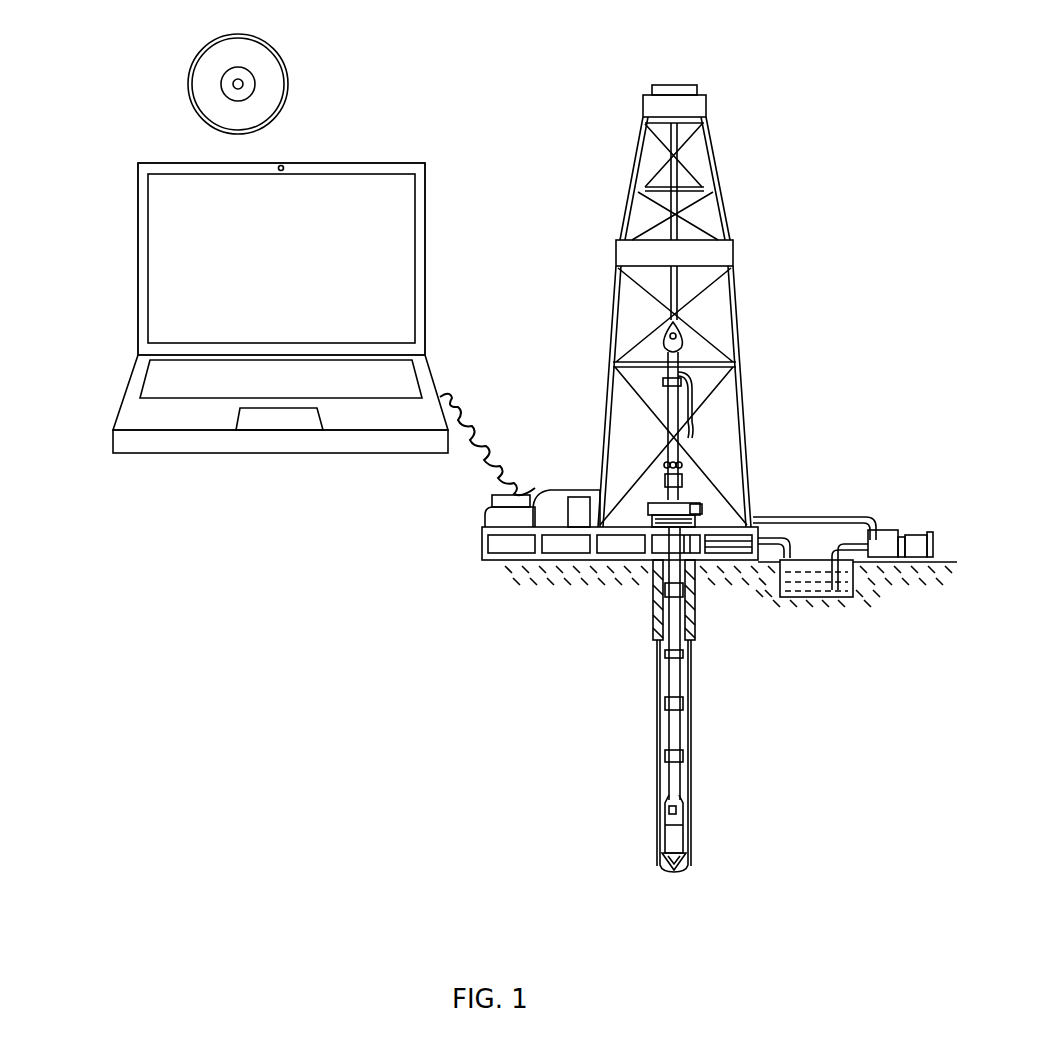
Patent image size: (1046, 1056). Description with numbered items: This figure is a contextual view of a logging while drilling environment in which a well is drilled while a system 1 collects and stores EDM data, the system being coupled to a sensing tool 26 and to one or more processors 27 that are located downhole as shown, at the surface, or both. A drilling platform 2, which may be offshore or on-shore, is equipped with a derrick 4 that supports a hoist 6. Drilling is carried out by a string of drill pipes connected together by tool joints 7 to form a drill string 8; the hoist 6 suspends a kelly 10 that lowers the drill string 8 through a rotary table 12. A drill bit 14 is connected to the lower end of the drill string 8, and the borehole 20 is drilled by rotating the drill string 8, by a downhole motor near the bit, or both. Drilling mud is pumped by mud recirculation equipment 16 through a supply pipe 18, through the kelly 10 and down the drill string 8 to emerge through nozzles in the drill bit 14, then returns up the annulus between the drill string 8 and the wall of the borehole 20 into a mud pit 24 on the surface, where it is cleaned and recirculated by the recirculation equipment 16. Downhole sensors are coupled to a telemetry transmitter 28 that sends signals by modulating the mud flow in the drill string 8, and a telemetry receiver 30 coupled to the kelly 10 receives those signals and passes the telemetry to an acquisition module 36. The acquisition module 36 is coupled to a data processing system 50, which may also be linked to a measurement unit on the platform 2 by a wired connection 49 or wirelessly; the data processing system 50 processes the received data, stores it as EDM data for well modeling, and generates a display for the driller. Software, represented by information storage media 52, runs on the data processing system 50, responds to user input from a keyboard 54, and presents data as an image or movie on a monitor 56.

The system 1 is at (104, 128).
The drilling platform 2 is at (482, 550).
The derrick 4 is at (713, 212).
The hoist 6 is at (677, 335).
The tool joints 7 is at (668, 652).
The drill string 8 is at (672, 672).
The kelly 10 is at (673, 398).
The rotary table 12 is at (660, 503).
The drill bit 14 is at (680, 866).
The mud recirculation equipment 16 is at (887, 530).
The supply pipe 18 is at (812, 518).
The borehole 20 is at (686, 723).
The mud pit 24 is at (822, 595).
The sensing tool 26 is at (670, 830).
The processors 27 is at (668, 810).
The telemetry transmitter 28 is at (678, 820).
The telemetry receiver 30 is at (683, 470).
The acquisition module 36 is at (578, 512).
The wired connection 49 is at (456, 405).
The data processing system 50 is at (148, 445).
The information storage media 52 is at (287, 80).
The keyboard 54 is at (378, 395).
The monitor 56 is at (425, 233).